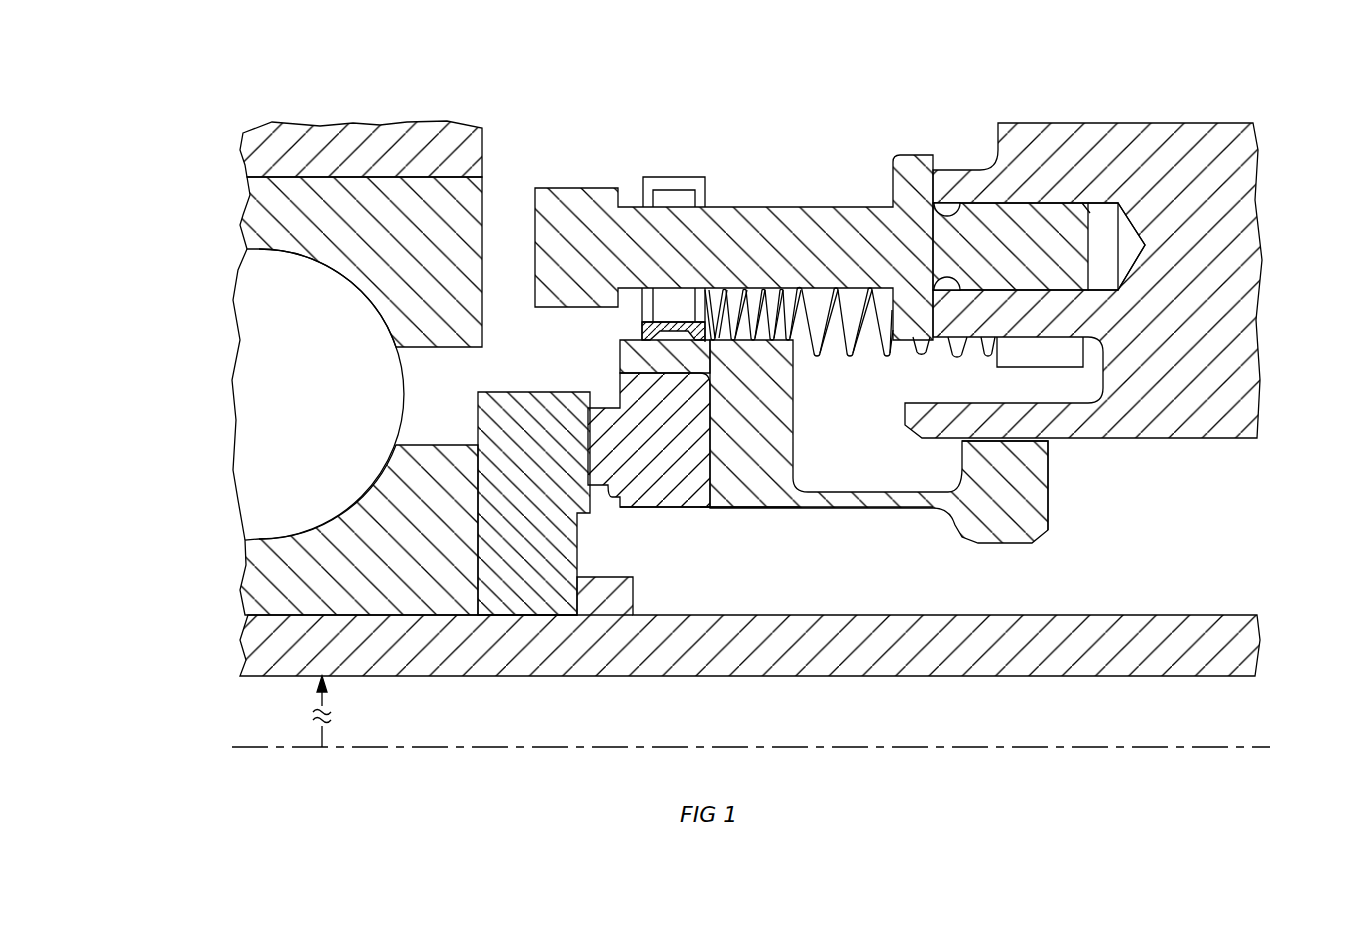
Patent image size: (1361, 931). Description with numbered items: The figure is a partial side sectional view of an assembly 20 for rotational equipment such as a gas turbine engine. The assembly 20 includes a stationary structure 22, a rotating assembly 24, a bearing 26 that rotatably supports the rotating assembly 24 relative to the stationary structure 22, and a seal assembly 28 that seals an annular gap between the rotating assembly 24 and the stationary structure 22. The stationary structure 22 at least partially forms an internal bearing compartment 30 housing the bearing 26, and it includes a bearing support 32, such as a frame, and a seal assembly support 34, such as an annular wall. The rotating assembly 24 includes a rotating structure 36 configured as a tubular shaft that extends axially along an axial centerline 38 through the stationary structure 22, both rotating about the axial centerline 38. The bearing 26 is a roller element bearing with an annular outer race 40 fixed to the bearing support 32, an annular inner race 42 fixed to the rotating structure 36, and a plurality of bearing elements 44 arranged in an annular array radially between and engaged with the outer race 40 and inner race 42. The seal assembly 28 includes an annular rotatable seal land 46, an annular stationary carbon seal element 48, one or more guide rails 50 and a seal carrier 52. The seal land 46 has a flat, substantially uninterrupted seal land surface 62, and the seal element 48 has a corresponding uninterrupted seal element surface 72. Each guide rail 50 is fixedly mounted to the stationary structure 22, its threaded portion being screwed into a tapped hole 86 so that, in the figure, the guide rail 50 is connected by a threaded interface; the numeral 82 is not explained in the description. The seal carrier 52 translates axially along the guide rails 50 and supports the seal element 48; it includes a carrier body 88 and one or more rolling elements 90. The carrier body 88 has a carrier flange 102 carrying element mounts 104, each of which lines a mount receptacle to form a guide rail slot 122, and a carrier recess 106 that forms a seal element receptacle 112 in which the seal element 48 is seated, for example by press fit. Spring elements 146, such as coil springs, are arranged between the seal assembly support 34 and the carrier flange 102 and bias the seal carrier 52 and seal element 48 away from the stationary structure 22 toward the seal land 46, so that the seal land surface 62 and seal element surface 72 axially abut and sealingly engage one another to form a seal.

The assembly 20 is at (204, 88).
The stationary structure 22 is at (762, 254).
The rotating assembly 24 is at (792, 645).
The bearing 26 is at (214, 240).
The seal assembly 28 is at (745, 129).
The internal bearing compartment 30 is at (648, 126).
The bearing support 32 is at (355, 130).
The seal assembly support 34 is at (1225, 123).
The rotating structure 36 is at (1262, 668).
The axial centerline 38 is at (1248, 745).
The outer race 40 is at (406, 236).
The inner race 42 is at (417, 566).
The bearing elements 44 is at (311, 420).
The seal land 46 is at (526, 618).
The seal element 48 is at (848, 453).
The guide rails 50 is at (728, 234).
The seal carrier 52 is at (1056, 494).
The seal land surface 62 is at (590, 440).
The seal element surface 72 is at (585, 460).
The plunger 82 is at (1122, 181).
The tapped hole 86 is at (1100, 228).
The carrier body 88 is at (829, 511).
The rolling elements 90 is at (668, 190).
The carrier flange 102 is at (645, 330).
The element mounts 104 is at (708, 195).
The carrier recess 106 is at (718, 498).
The seal element receptacle 112 is at (816, 536).
The guide rail slot 122 is at (639, 313).
The spring elements 146 is at (860, 356).